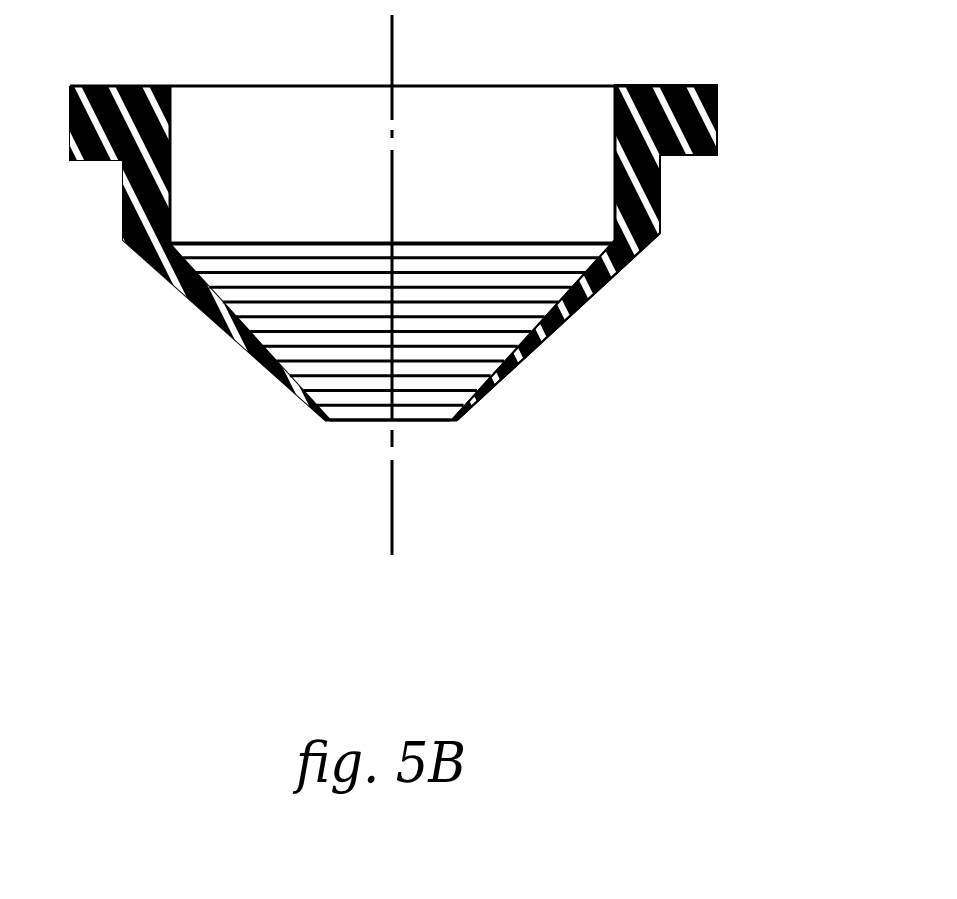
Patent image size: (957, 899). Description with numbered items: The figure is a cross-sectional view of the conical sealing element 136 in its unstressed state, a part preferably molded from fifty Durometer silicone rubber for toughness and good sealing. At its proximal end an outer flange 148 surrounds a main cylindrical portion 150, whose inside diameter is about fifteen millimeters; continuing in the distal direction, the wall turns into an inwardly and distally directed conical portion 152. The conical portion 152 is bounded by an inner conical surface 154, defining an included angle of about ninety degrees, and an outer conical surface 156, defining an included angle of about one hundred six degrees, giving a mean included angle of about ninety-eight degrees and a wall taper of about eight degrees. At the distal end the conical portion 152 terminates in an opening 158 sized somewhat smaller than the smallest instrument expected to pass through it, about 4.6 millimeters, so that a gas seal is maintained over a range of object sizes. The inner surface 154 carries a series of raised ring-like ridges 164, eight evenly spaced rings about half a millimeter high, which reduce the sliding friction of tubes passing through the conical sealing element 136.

The conical sealing element 136 is at (694, 64).
The outer flange 148 is at (707, 118).
The main cylindrical portion 150 is at (650, 212).
The conical portion 152 is at (523, 360).
The inner conical surface 154 is at (610, 247).
The outer conical surface 156 is at (587, 305).
The opening 158 is at (427, 408).
The raised ring-like ridges 164 is at (250, 275).